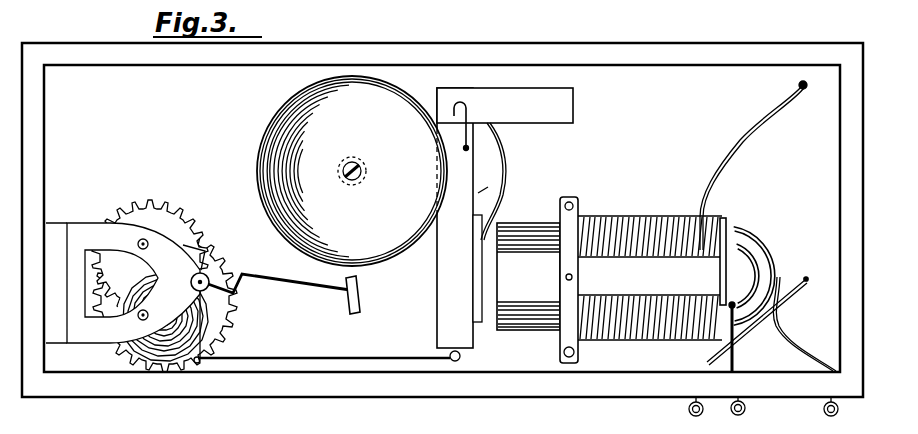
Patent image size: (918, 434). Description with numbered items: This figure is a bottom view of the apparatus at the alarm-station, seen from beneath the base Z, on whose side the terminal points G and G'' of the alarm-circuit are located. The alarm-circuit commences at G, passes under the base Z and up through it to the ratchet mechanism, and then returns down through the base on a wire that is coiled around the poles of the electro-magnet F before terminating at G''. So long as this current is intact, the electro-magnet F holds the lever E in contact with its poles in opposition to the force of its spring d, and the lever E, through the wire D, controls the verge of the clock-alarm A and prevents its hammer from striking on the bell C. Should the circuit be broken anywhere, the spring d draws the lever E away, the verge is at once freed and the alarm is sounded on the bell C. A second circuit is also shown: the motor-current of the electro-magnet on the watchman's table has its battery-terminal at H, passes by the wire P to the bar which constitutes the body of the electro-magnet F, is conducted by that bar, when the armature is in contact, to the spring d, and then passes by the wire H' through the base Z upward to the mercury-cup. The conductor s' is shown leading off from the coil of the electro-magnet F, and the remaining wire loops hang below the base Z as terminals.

The clock-alarm A is at (261, 304).
The bell C is at (352, 171).
The spring d is at (496, 181).
The wire D is at (329, 360).
The lever E is at (505, 218).
The electro-magnet F is at (747, 271).
The terminal point G is at (703, 410).
The terminal point G'' is at (749, 409).
The battery-terminal H is at (840, 410).
The wire H' is at (475, 126).
The wire P is at (804, 324).
The conductor wire s' is at (753, 165).
The base Z is at (381, 289).